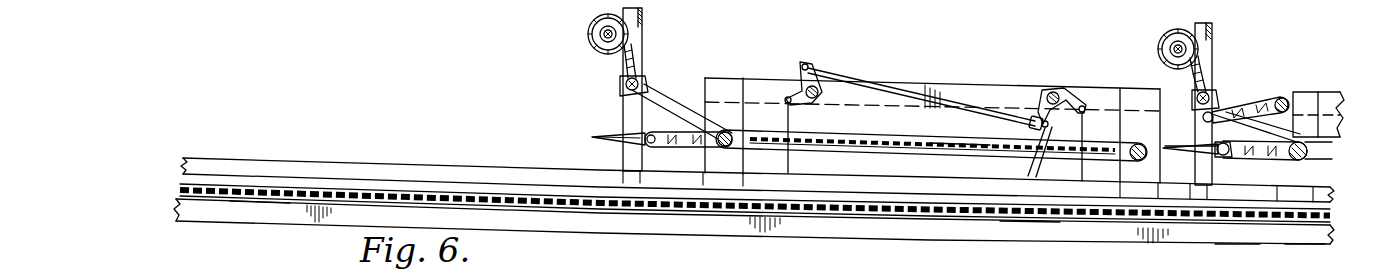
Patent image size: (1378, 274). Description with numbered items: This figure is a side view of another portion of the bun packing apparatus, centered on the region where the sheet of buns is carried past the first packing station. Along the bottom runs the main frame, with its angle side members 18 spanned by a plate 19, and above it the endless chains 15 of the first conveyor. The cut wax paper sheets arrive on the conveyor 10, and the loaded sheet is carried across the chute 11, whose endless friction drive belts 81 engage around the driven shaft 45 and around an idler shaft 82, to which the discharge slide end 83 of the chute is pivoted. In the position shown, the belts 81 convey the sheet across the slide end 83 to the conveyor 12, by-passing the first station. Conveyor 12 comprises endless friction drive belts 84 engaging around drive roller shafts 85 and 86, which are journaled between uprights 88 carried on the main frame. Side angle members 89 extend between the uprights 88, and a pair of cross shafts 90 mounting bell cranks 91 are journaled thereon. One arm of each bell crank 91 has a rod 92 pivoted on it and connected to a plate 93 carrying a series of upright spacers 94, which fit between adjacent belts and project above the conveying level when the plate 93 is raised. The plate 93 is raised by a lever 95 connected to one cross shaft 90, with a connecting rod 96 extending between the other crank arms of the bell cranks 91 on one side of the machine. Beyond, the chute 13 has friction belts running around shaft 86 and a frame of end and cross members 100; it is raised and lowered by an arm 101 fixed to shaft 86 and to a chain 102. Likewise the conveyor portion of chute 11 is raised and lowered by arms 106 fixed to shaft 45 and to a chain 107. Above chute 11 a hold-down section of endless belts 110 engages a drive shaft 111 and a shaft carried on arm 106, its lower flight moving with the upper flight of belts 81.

The conveyor 10 is at (1328, 126).
The chute 11 is at (1222, 156).
The conveyor 12 is at (942, 128).
The chute 13 is at (600, 134).
The endless chains 15 is at (408, 194).
The angle side members 18 is at (540, 222).
The plate 19 is at (252, 200).
The shaft 45 is at (1318, 160).
The endless friction drive belts 81 is at (1258, 158).
The idler shaft 82 is at (1214, 136).
The discharge slide end 83 is at (1166, 151).
The endless friction drive belts 84 is at (843, 150).
The drive roller shaft 85 is at (1133, 160).
The drive roller shaft 86 is at (736, 150).
The uprights 88 is at (728, 78).
The side angle members 89 is at (1005, 88).
The cross shafts 90 is at (1055, 92).
The bell cranks 91 is at (800, 72).
The rod 92 is at (790, 118).
The plate 93 is at (903, 152).
The upright spacers 94 is at (951, 154).
The lever 95 is at (1030, 205).
The connecting rod 96 is at (874, 58).
The frame members 100 is at (1237, 259).
The arm 101 is at (1305, 259).
The chain 102 is at (635, 30).
The arms 106 is at (1222, 96).
The chain 107 is at (1215, 48).
The endless belts 110 is at (1256, 100).
The drive shaft 111 is at (1304, 96).